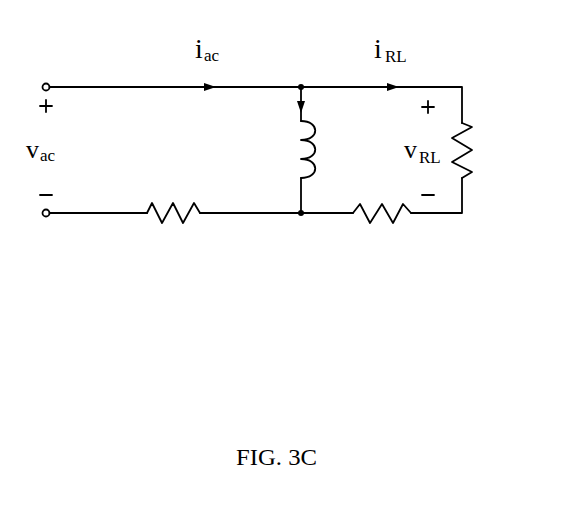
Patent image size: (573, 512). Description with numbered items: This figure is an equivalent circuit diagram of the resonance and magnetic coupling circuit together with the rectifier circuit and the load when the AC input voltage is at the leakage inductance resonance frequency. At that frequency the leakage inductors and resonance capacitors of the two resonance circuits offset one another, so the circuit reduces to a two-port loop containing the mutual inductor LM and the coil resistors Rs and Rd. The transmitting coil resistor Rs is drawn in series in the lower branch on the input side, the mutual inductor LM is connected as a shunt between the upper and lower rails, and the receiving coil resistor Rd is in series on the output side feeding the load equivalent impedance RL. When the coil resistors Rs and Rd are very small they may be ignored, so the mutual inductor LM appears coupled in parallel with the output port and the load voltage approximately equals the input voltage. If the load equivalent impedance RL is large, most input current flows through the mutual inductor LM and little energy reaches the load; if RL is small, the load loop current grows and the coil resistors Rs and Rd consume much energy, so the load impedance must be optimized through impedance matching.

The transmitting coil resistor Rs is at (173, 238).
The receiving coil resistor Rd is at (382, 239).
The mutual inductor LM is at (285, 150).
The load equivalent impedance RL is at (482, 150).